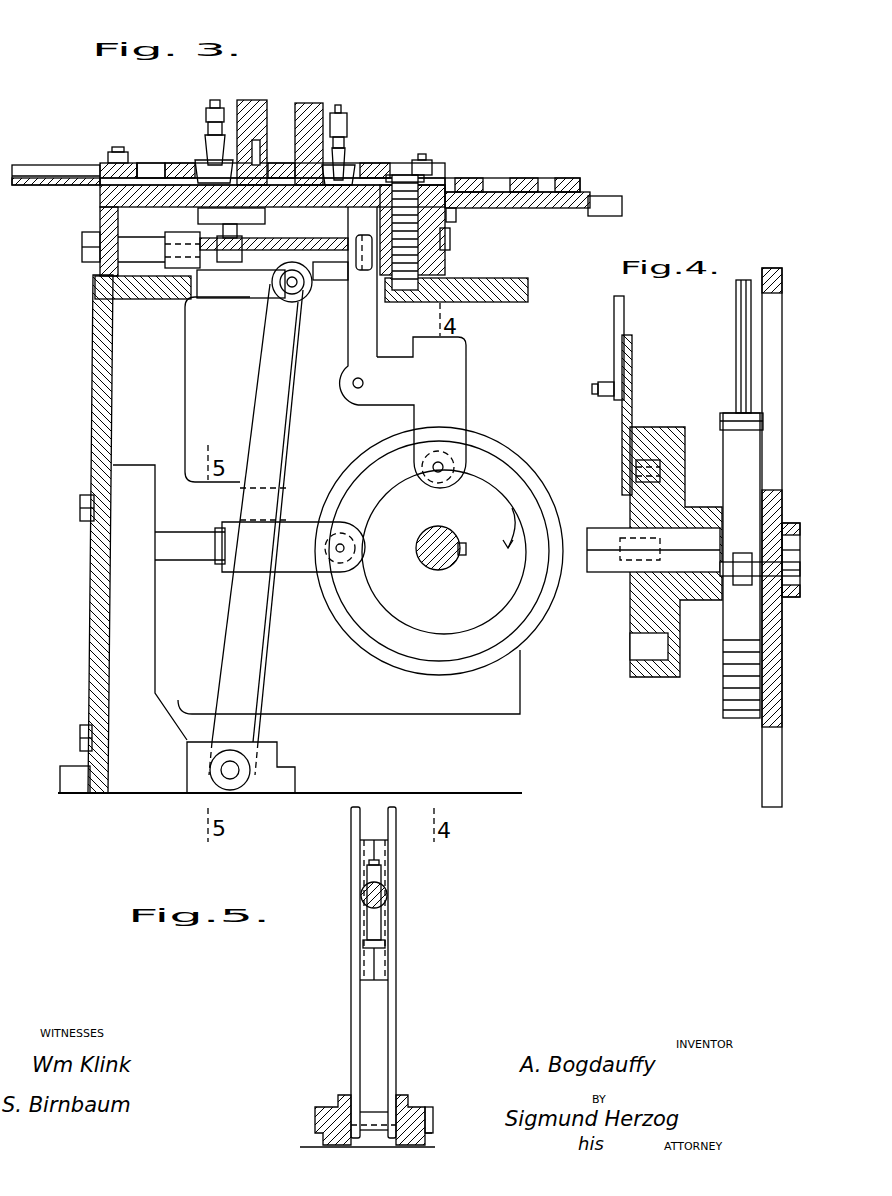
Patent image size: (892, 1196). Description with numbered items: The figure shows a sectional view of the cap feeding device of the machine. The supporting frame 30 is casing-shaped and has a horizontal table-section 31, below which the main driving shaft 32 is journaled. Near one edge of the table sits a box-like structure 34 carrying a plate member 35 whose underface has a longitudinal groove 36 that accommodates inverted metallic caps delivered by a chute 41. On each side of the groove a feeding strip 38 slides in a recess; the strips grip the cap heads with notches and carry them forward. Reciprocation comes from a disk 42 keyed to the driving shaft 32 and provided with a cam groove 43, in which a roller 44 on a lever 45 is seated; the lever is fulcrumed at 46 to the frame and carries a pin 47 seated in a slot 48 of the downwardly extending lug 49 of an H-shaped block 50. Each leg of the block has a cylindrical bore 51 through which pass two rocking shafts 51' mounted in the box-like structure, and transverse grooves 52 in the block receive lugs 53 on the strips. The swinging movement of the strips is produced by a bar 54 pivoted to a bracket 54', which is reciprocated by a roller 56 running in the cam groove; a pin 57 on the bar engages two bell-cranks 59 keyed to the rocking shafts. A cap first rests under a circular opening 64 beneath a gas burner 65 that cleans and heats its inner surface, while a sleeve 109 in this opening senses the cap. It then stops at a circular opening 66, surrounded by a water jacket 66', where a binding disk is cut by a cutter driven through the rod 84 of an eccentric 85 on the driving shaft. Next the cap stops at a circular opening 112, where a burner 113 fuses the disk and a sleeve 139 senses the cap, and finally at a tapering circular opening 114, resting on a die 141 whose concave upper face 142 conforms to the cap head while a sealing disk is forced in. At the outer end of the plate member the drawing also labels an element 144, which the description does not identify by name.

In FIG. 3, the supporting frame 30 is at (92, 372).
In FIG. 4, the supporting frame 30 is at (763, 726).
In FIG. 3, the table-section 31 is at (142, 300).
In FIG. 3, the main driving shaft 32 is at (446, 532).
In FIG. 4, the main driving shaft 32 is at (604, 574).
In FIG. 3, the box-like structure 34 is at (100, 208).
In FIG. 3, the plate member 35 is at (185, 170).
In FIG. 3, the longitudinal groove 36 is at (126, 152).
In FIG. 3, the feeding strip 38 is at (192, 170).
In FIG. 3, the chute 41 is at (46, 176).
In FIG. 3, the disk 42 is at (542, 492).
In FIG. 4, the disk 42 is at (640, 614).
In FIG. 3, the cam groove 43 is at (388, 632).
In FIG. 4, the cam groove 43 is at (648, 652).
In FIG. 3, the roller 44 is at (330, 494).
In FIG. 3, the lever 45 is at (288, 436).
In FIG. 5, the lever 45 is at (396, 1016).
In FIG. 3, the fulcrum 46 is at (240, 772).
In FIG. 5, the fulcrum 46 is at (433, 1124).
In FIG. 3, the pin 47 is at (282, 290).
In FIG. 3, the slot 48 is at (300, 302).
In FIG. 3, the downwardly extending lug 49 is at (290, 270).
In FIG. 3, the H-shaped block 50 is at (290, 240).
In FIG. 3, the cylindrical bore 51 is at (148, 234).
In FIG. 3, the rocking shaft 51' is at (81, 258).
In FIG. 3, the transverse groove 52 is at (356, 238).
In FIG. 3, the lug 53 is at (385, 183).
In FIG. 3, the bar 54 is at (378, 306).
In FIG. 4, the bar 54 is at (630, 348).
In FIG. 3, the bracket 54' is at (425, 412).
In FIG. 4, the bracket 54' is at (627, 415).
In FIG. 3, the roller 56 is at (455, 458).
In FIG. 4, the roller 56 is at (650, 456).
In FIG. 3, the pin 57 is at (330, 279).
In FIG. 3, the bell-crank 59 is at (462, 240).
In FIG. 3, the circular opening 64 is at (210, 160).
In FIG. 3, the gas burner 65 is at (218, 120).
In FIG. 3, the circular opening 66 is at (266, 133).
In FIG. 3, the water jacket 66' is at (346, 132).
In FIG. 4, the rod 84 is at (745, 350).
In FIG. 4, the eccentric 85 is at (724, 708).
In FIG. 3, the sleeve 109 is at (232, 240).
In FIG. 3, the circular opening 112 is at (352, 168).
In FIG. 3, the burner 113 is at (348, 120).
In FIG. 3, the circular opening 114 is at (425, 165).
In FIG. 3, the sleeve 139 is at (396, 174).
In FIG. 3, the die 141 is at (458, 214).
In FIG. 3, the upper face 142 is at (450, 182).
In FIG. 3, the plate 144 is at (600, 216).